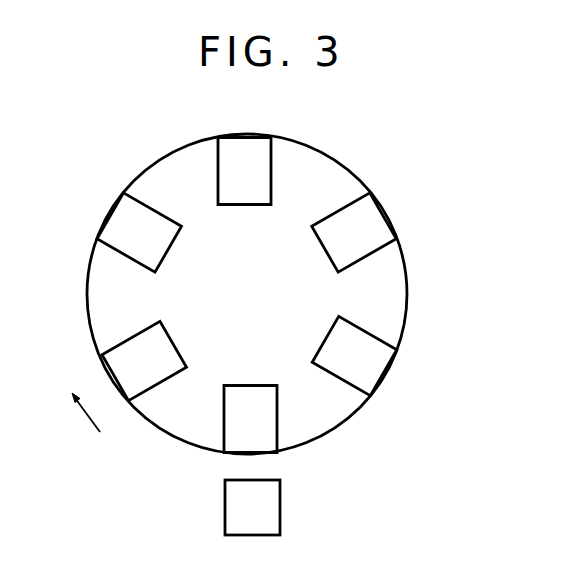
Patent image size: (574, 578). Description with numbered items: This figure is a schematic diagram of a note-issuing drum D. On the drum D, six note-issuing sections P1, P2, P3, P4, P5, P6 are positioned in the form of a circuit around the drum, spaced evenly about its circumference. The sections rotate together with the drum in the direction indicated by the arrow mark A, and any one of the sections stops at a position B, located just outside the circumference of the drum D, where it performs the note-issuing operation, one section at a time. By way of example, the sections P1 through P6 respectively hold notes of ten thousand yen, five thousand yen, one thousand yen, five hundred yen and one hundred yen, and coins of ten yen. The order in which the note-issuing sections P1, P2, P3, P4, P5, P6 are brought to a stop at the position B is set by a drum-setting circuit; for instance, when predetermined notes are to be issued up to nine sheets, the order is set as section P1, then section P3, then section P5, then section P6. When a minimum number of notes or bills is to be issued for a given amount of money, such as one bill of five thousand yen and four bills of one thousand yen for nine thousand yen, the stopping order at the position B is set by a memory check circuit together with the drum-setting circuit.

The note-issuing drum D is at (327, 155).
The note-issuing section P1 is at (250, 385).
The note-issuing section P2 is at (355, 326).
The note-issuing section P3 is at (329, 248).
The note-issuing section P4 is at (253, 205).
The note-issuing section P5 is at (165, 252).
The note-issuing section P6 is at (170, 341).
The arrow mark A is at (86, 413).
The position B is at (260, 468).